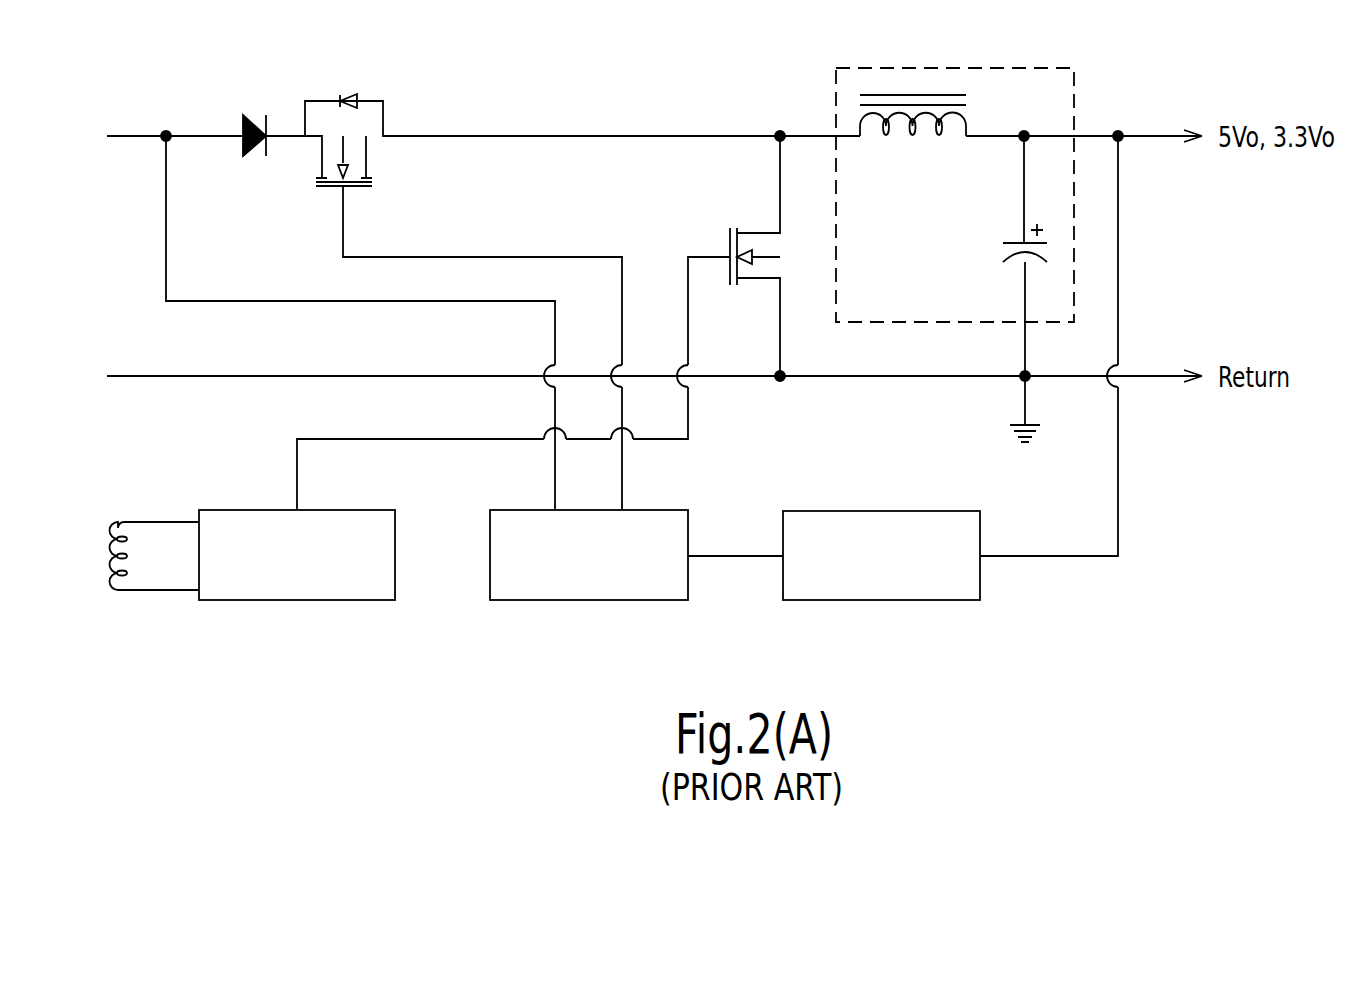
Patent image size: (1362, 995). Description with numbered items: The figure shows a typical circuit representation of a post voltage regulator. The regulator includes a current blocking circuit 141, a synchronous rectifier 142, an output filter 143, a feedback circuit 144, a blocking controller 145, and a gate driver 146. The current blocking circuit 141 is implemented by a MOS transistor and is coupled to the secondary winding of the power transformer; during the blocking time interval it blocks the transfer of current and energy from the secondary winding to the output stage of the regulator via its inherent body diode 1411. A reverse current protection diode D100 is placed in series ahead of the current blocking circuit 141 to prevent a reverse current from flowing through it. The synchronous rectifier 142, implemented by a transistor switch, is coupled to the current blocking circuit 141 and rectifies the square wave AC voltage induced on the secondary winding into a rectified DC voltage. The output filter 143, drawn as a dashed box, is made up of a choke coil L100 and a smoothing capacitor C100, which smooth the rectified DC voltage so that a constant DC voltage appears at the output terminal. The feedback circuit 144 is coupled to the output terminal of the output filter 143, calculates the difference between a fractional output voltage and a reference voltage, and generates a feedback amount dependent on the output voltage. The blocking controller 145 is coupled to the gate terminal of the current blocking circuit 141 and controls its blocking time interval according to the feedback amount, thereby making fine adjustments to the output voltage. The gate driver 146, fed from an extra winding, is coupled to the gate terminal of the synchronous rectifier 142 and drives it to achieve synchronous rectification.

The reverse current protection diode D100 is at (237, 123).
The body diode 1411 is at (343, 97).
The current blocking circuit 141 is at (360, 187).
The synchronous rectifier 142 is at (740, 225).
The output filter 143 is at (965, 67).
The choke coil L100 is at (945, 112).
The smoothing capacitor C100 is at (988, 244).
The feedback circuit 144 is at (885, 600).
The blocking controller 145 is at (592, 600).
The gate driver 146 is at (302, 600).